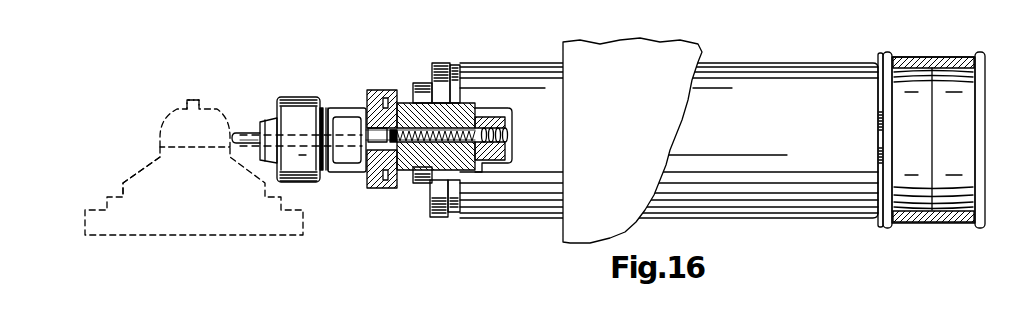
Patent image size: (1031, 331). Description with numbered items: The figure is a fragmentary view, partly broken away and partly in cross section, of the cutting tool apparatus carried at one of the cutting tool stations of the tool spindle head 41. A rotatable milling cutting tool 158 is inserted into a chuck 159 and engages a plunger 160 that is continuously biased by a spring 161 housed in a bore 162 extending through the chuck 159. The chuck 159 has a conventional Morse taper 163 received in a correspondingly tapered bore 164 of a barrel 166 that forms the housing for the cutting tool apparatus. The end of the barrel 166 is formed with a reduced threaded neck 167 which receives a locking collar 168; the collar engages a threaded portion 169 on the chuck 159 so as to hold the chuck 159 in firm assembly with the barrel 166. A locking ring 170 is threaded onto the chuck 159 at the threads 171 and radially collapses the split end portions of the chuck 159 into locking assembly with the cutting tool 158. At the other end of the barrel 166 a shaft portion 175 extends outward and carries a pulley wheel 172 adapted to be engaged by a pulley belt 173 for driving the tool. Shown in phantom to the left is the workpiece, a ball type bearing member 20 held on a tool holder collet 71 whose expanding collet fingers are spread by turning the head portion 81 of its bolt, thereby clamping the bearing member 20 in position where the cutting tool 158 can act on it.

The ball type bearing member 20 is at (163, 120).
The head portion 81 is at (195, 98).
The tool holder collet 71 is at (123, 183).
The rotatable milling cutting tool 158 is at (243, 133).
The chuck 159 is at (268, 118).
The locking ring 170 is at (300, 182).
The threaded connection 171 is at (323, 108).
The locking collar 168 is at (372, 186).
The threaded portion 169 is at (372, 100).
The reduced threaded neck 167 is at (390, 190).
The plunger 160 is at (393, 117).
The tapered bore 164 is at (433, 117).
The spring 161 is at (478, 117).
The bore 162 is at (474, 165).
The Morse taper 163 is at (415, 185).
The barrel 166 is at (762, 207).
The tool spindle head 41 is at (645, 48).
The shaft portion 175 is at (880, 128).
The pulley wheel 172 is at (985, 133).
The pulley belt 173 is at (955, 57).